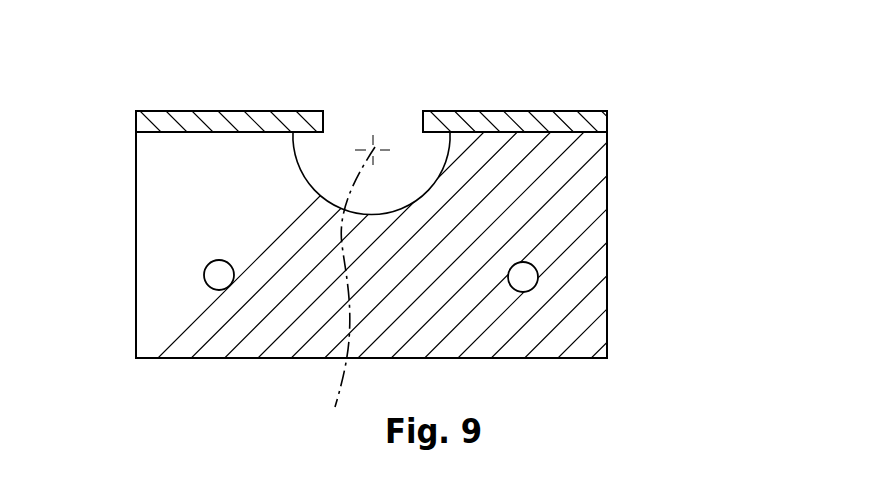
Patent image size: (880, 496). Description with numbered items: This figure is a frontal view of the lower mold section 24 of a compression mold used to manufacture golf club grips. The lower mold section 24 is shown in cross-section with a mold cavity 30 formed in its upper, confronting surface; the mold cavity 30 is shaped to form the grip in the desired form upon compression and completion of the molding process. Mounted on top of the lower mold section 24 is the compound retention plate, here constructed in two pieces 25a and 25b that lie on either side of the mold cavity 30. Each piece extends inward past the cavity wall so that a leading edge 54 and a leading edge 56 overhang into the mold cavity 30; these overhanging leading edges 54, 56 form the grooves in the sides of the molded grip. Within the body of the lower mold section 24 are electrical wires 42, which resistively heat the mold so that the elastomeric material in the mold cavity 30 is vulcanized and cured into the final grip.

The lower mold section 24 is at (607, 223).
The compound retention plate piece 25a is at (160, 118).
The compound retention plate piece 25b is at (548, 117).
The leading edge 54 is at (324, 118).
The leading edge 56 is at (422, 118).
The electrical wires 42 is at (218, 275).
The mold cavity 30 is at (356, 286).